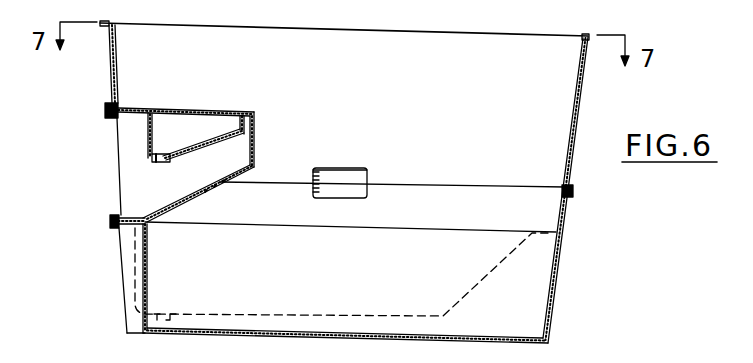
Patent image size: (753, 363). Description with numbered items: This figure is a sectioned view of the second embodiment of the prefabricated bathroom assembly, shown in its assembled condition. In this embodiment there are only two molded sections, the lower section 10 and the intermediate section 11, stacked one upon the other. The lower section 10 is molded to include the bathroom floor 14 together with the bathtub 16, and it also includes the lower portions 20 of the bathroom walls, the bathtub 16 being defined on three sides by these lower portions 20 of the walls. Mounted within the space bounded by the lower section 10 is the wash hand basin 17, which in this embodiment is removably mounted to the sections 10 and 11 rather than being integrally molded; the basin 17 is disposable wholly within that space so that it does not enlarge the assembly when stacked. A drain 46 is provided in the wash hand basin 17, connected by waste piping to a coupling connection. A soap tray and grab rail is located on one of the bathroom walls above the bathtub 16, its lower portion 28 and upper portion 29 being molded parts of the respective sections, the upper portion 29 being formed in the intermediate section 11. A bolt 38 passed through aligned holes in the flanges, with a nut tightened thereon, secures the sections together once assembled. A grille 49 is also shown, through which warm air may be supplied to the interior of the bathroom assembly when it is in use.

The lower section 10 is at (392, 202).
The intermediate section 11 is at (484, 99).
The bathroom floor 14 is at (505, 337).
The bathtub 16 is at (397, 228).
The wash hand basin 17 is at (222, 116).
The lower portions of the bathroom walls 20 is at (558, 266).
The lower portion of soap tray and grab rail 28 is at (340, 198).
The upper portion of soap tray and grab rail 29 is at (338, 171).
The bolt 38 is at (111, 103).
The drain 46 is at (159, 165).
The grille 49 is at (224, 182).